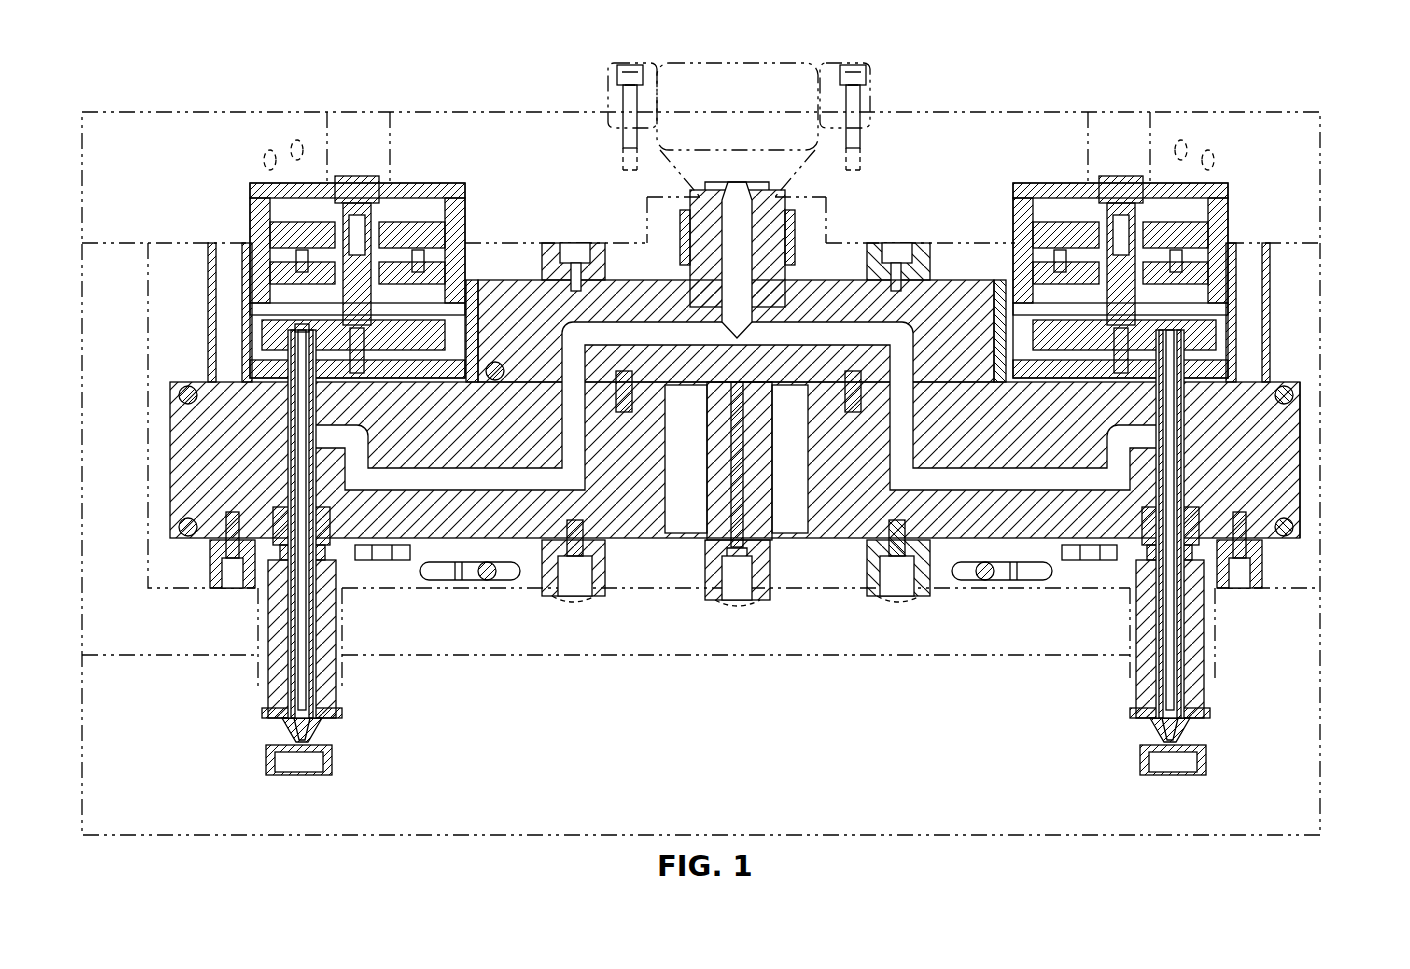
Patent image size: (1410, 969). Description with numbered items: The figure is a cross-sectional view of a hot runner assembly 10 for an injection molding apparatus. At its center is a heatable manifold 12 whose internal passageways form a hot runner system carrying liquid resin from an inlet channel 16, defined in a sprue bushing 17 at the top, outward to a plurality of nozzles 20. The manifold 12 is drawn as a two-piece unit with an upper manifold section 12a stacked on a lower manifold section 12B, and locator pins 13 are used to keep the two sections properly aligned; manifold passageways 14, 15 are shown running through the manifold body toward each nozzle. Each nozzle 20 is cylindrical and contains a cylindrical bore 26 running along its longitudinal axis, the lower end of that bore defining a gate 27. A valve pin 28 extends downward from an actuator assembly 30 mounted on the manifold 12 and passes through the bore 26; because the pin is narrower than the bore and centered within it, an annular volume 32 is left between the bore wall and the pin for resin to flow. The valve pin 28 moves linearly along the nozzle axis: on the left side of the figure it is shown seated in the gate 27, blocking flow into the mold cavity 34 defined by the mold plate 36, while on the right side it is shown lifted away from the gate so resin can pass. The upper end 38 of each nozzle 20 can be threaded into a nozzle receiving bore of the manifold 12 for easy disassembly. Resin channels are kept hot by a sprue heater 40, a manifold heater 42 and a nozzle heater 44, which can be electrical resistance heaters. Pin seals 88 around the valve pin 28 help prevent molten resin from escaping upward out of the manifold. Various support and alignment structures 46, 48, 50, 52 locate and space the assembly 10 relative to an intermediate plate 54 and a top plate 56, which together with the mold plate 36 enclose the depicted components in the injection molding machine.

The hot runner assembly 10 is at (1270, 66).
The heatable manifold 12 is at (1322, 384).
The upper manifold section 12a is at (945, 298).
The lower manifold section 12B is at (1298, 462).
The locator pins 13 is at (627, 394).
The fluid passage 14 is at (440, 482).
The valve body 15 is at (980, 483).
The inlet channel 16 is at (740, 247).
The sprue bushing 17 is at (766, 262).
The nozzle 20 is at (1217, 680).
The cylindrical bore 26 is at (310, 655).
The gate 27 is at (318, 728).
The valve pin 28 is at (298, 607).
The actuator assembly 30 is at (258, 232).
The annular volume 32 is at (292, 662).
The mold cavity 34 is at (308, 762).
The mold plate 36 is at (92, 710).
The upper end of nozzle 38 is at (272, 517).
The sprue heater 40 is at (700, 240).
The manifold heater 42 is at (495, 362).
The nozzle heater 44 is at (325, 699).
The support/alignment structure 46 is at (230, 574).
The support/alignment structure 48 is at (594, 577).
The support/alignment structure 50 is at (762, 578).
The support/alignment structure 52 is at (927, 240).
The intermediate plate 54 is at (92, 468).
The top plate 56 is at (190, 130).
The pin seals 88 is at (292, 356).